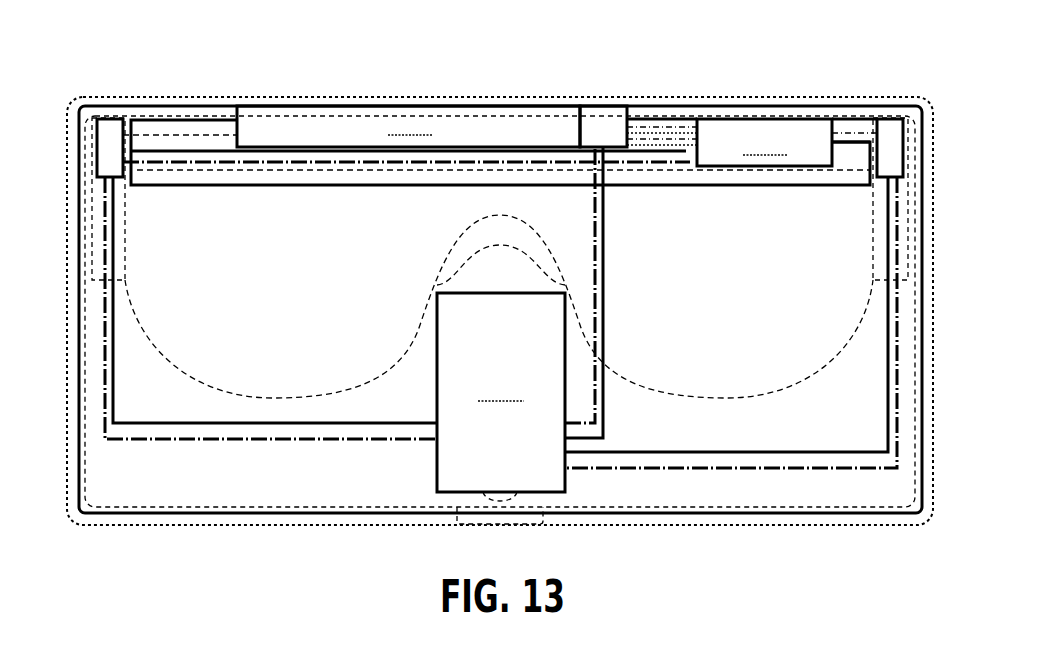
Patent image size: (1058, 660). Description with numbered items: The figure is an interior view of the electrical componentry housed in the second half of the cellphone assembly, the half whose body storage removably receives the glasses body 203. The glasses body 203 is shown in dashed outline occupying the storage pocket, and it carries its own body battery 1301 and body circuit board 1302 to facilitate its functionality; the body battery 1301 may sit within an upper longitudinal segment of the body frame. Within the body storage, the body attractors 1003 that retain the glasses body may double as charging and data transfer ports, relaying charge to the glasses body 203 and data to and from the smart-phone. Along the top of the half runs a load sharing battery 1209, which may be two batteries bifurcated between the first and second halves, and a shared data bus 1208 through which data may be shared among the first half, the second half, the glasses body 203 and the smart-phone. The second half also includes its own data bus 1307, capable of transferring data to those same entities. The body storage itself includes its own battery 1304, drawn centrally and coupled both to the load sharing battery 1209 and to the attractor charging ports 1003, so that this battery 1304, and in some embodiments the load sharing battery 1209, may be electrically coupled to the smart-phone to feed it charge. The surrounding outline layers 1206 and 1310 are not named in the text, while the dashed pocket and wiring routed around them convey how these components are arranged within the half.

The housing shell 1206 is at (686, 151).
The data bus 1307 is at (746, 513).
The inner liner 1310 is at (152, 477).
The glasses body 203 is at (830, 295).
The body attractors 1003 is at (893, 150).
The body circuit board 1302 is at (181, 135).
The shared data bus 1208 is at (408, 126).
The load sharing battery 1209 is at (604, 122).
The body battery 1301 is at (787, 142).
The battery 1304 is at (501, 392).